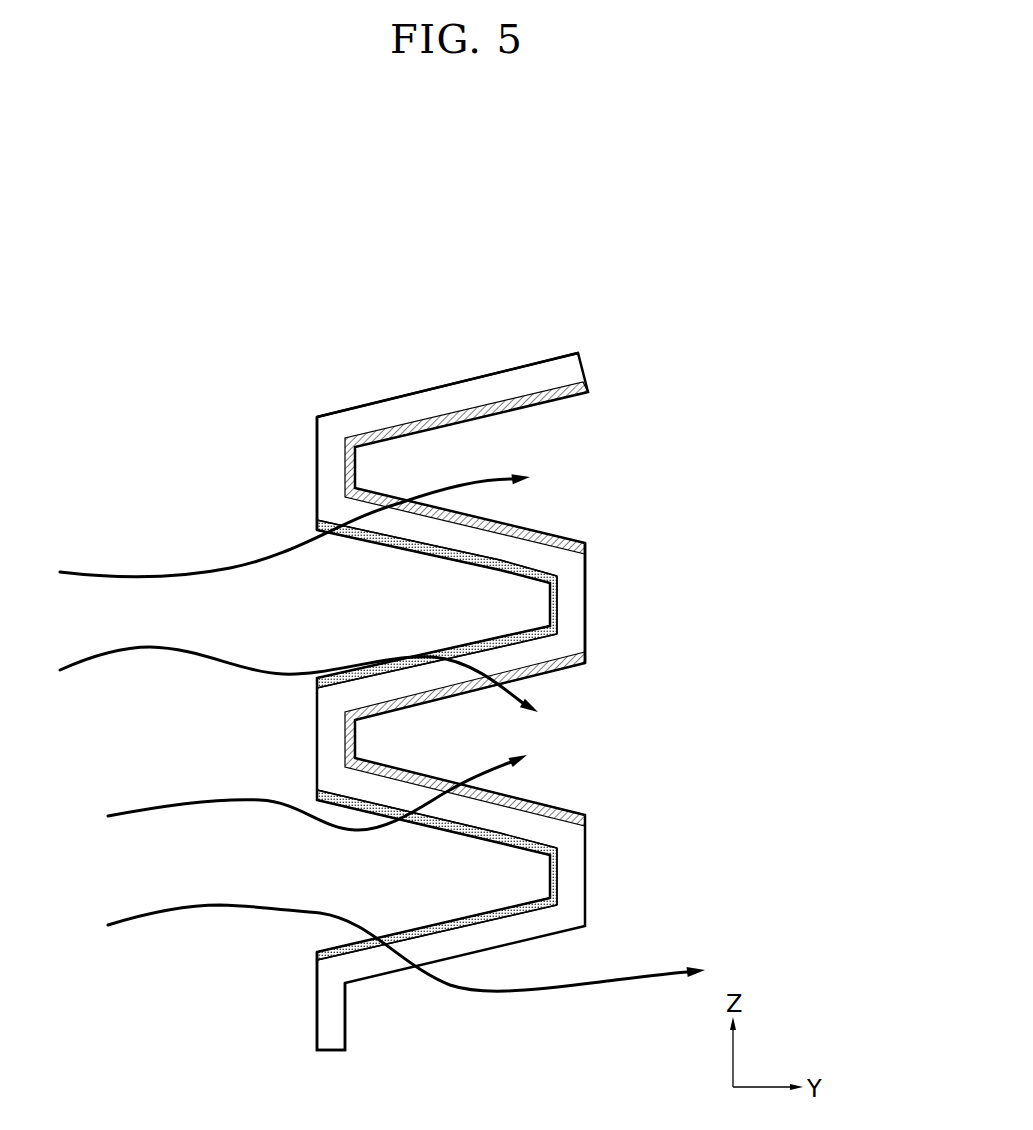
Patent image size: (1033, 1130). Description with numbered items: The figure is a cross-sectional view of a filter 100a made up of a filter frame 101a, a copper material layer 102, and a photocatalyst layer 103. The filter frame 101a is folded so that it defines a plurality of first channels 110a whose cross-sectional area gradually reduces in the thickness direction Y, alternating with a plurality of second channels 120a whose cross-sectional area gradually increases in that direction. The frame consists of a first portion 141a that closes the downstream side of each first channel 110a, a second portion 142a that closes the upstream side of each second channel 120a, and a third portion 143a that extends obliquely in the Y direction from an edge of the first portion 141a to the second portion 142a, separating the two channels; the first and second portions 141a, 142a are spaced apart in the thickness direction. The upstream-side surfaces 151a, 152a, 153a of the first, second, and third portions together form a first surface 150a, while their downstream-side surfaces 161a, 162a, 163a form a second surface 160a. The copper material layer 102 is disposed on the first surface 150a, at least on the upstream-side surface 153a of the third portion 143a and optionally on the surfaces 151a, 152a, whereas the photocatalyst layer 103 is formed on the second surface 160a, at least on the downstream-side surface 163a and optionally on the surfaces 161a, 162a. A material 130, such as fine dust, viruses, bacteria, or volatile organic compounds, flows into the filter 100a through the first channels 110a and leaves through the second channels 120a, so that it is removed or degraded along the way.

The filter 100a is at (754, 272).
The filter frame 101a is at (628, 336).
The copper material layer 102 is at (332, 944).
The photocatalyst layer 103 is at (575, 397).
The first channel 110a is at (457, 617).
The second channel 120a is at (457, 482).
The material 130 is at (120, 571).
The first portion 141a is at (584, 604).
The second portion 142a is at (316, 466).
The third portion 143a is at (557, 557).
The first surface 150a is at (223, 578).
The upstream-side surface of the first portion 151a is at (550, 600).
The upstream-side surface of the second portion 152a is at (317, 520).
The upstream-side surface of the third portion 153a is at (432, 652).
The second surface 160a is at (682, 708).
The downstream-side surface of the first portion 161a is at (585, 850).
The downstream-side surface of the second portion 162a is at (355, 727).
The downstream-side surface of the third portion 163a is at (560, 668).